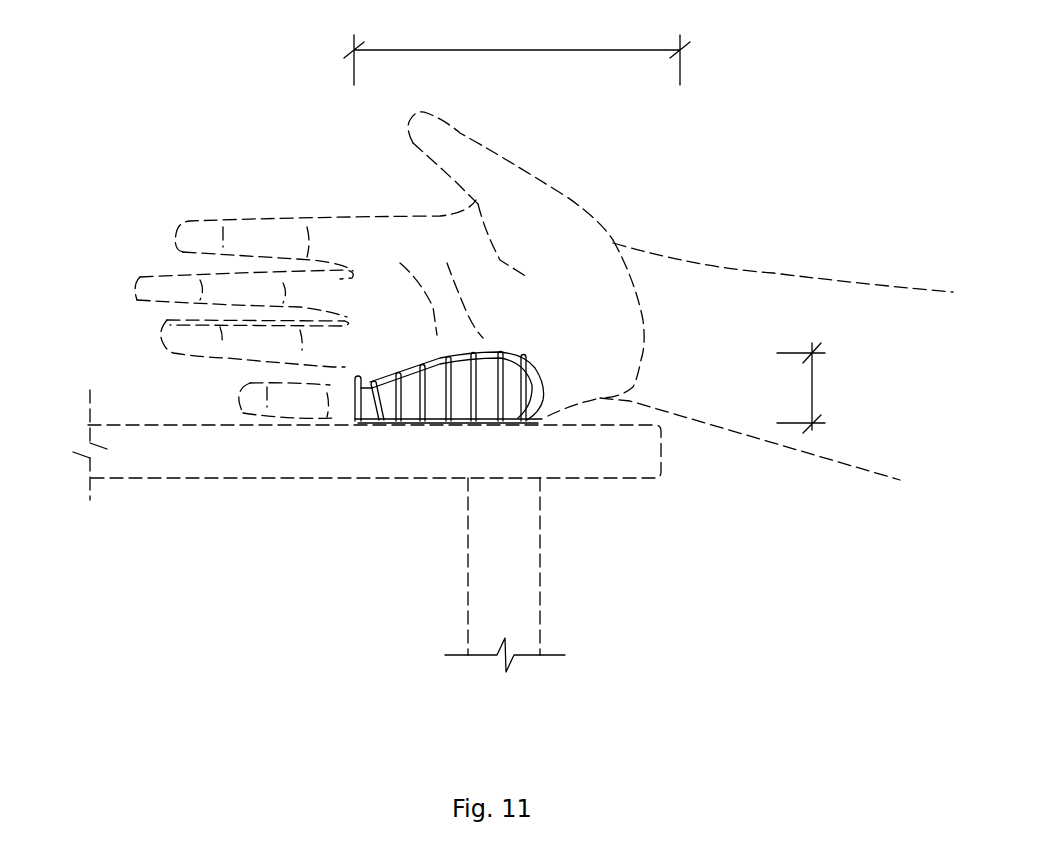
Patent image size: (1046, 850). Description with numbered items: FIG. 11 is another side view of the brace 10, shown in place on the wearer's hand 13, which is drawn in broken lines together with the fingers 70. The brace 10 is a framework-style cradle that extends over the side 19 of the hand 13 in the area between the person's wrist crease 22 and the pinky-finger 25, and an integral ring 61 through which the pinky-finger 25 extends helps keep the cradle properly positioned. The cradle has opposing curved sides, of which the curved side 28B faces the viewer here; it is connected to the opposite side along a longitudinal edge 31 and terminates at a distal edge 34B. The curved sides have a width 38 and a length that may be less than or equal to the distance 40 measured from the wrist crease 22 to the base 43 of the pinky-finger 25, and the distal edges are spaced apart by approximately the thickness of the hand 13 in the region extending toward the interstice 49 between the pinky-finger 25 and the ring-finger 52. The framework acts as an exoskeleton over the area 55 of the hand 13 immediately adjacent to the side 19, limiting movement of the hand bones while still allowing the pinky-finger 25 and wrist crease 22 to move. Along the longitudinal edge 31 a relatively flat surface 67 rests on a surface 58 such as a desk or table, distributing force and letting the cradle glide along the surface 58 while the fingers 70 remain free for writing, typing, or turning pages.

The brace 10 is at (387, 440).
The hand 13 is at (393, 306).
The side of the hand 19 is at (548, 417).
The wrist crease 22 is at (645, 308).
The pinky-finger 25 is at (233, 401).
The curved side 28B is at (503, 387).
The longitudinal edge 31 is at (413, 424).
The distal edge 34B is at (487, 352).
The width 38 is at (812, 387).
The distance 40 is at (505, 50).
The base of the pinky-finger 43 is at (364, 373).
The interstice 49 is at (352, 373).
The ring-finger 52 is at (163, 333).
The adjacent area of the hand 55 is at (458, 373).
The surface 58 is at (147, 422).
The ring 61 is at (355, 405).
The flat surface 67 is at (458, 431).
The fingers 70 is at (230, 205).